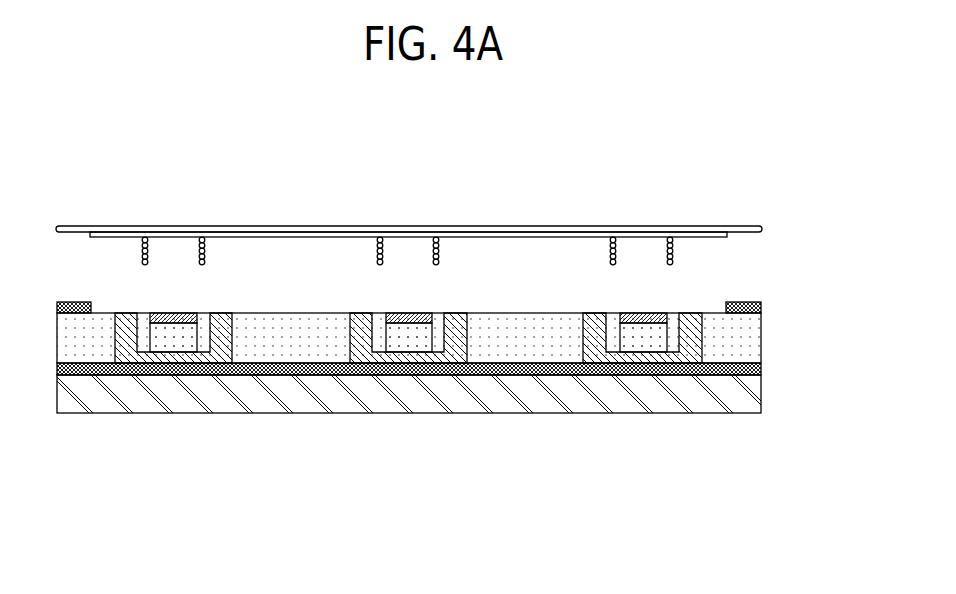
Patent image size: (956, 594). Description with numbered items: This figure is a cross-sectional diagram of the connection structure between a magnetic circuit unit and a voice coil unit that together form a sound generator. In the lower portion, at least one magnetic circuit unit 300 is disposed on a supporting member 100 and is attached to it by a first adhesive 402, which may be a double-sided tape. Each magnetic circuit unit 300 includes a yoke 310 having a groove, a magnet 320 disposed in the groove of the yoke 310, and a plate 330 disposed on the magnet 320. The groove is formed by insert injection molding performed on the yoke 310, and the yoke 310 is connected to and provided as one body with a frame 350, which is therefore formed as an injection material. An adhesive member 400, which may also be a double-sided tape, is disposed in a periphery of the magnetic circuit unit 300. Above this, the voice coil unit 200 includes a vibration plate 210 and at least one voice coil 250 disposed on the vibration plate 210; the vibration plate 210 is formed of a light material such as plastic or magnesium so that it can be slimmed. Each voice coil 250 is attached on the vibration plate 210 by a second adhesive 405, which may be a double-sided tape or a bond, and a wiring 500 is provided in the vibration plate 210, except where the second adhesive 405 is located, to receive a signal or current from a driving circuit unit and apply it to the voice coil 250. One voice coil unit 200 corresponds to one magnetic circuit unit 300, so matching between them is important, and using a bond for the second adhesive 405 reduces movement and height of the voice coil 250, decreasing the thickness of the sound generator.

The supporting member 100 is at (446, 396).
The frame 350 is at (500, 350).
The first adhesive 402 is at (550, 368).
The adhesive member 400 is at (761, 305).
The magnetic circuit unit 300 is at (410, 404).
The yoke 310 is at (682, 347).
The magnet 320 is at (632, 347).
The plate 330 is at (648, 322).
The voice coil unit 200 is at (409, 200).
The vibration plate 210 is at (427, 232).
The voice coil 250 is at (445, 166).
The wiring 500 is at (409, 205).
The second adhesive 405 is at (177, 237).